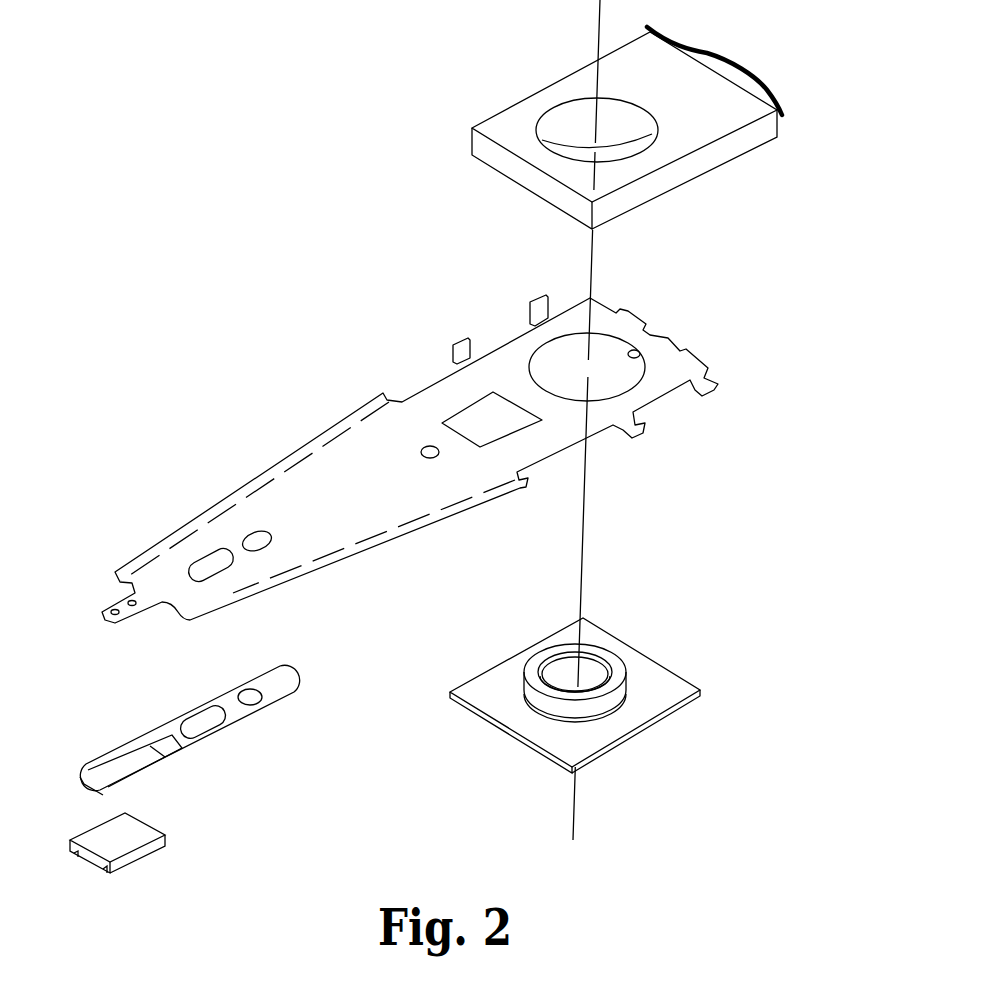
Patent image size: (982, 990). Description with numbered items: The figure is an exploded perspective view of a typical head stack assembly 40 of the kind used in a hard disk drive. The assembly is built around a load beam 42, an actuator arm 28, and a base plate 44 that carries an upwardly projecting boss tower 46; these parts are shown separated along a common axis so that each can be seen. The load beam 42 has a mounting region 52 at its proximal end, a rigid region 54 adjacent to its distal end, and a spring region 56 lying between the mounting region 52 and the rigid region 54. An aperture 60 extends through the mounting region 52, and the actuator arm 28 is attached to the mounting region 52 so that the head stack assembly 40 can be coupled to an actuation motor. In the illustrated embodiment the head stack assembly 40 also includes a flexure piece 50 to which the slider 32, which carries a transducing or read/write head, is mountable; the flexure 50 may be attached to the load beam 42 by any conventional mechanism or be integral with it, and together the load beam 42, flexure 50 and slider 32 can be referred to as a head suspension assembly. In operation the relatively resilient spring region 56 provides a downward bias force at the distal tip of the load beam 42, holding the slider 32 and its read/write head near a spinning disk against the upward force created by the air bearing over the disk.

The actuator arm 28 is at (635, 213).
The slider 32 is at (145, 863).
The head stack assembly 40 is at (357, 222).
The load beam 42 is at (411, 452).
The base plate 44 is at (593, 709).
The boss tower 46 is at (547, 705).
The flexure piece 50 is at (217, 745).
The mounting region 52 is at (510, 353).
The rigid region 54 is at (287, 493).
The spring region 56 is at (437, 400).
The aperture 60 is at (630, 352).